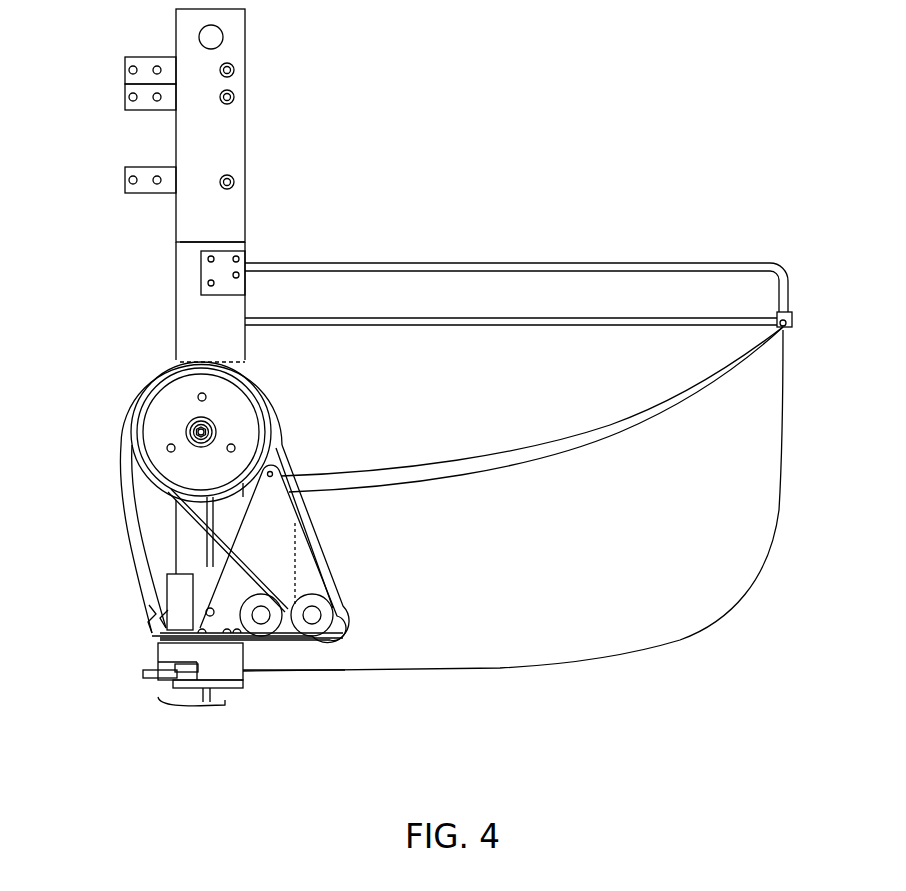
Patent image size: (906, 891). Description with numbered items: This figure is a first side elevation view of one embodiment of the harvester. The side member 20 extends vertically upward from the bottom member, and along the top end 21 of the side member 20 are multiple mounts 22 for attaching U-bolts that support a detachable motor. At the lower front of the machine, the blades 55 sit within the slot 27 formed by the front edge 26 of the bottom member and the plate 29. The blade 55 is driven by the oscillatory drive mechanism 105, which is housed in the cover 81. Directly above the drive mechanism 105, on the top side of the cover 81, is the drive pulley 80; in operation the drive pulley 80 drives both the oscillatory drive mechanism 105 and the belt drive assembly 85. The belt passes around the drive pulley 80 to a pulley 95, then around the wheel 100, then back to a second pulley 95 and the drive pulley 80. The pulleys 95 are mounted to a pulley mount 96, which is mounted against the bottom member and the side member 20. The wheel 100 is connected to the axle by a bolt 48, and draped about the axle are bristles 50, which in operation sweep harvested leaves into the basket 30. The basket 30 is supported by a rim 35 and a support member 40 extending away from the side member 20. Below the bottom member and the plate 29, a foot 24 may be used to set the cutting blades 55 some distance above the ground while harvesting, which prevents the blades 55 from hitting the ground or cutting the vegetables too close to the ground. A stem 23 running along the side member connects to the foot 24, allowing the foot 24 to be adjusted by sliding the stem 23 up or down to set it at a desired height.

The side member 20 is at (188, 307).
The top end 21 is at (237, 118).
The mounts 22 is at (128, 97).
The stem 23 is at (210, 520).
The foot 24 is at (190, 705).
The front edge 26 is at (167, 653).
The slot 27 is at (200, 667).
The plate 29 is at (245, 683).
The basket 30 is at (428, 404).
The rim 35 is at (668, 320).
The support member 40 is at (420, 263).
The bolt 48 is at (193, 430).
The bristles 50 is at (142, 387).
The blades 55 is at (148, 680).
The drive pulley 80 is at (178, 598).
The cover 81 is at (228, 665).
The belt drive assembly 85 is at (102, 505).
The pulleys 95 is at (313, 630).
The pulley mount 96 is at (275, 521).
The wheel 100 is at (191, 413).
The oscillatory drive mechanism 105 is at (188, 678).